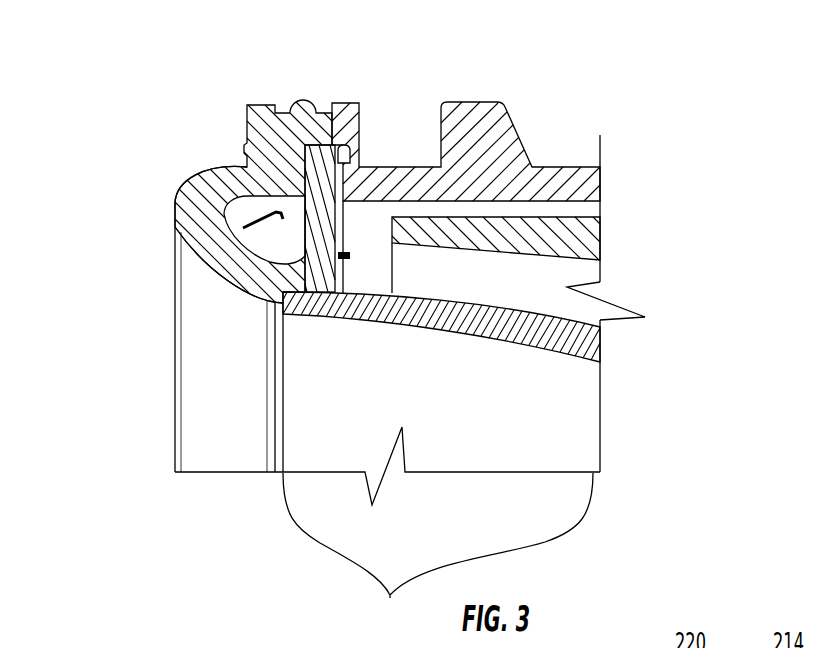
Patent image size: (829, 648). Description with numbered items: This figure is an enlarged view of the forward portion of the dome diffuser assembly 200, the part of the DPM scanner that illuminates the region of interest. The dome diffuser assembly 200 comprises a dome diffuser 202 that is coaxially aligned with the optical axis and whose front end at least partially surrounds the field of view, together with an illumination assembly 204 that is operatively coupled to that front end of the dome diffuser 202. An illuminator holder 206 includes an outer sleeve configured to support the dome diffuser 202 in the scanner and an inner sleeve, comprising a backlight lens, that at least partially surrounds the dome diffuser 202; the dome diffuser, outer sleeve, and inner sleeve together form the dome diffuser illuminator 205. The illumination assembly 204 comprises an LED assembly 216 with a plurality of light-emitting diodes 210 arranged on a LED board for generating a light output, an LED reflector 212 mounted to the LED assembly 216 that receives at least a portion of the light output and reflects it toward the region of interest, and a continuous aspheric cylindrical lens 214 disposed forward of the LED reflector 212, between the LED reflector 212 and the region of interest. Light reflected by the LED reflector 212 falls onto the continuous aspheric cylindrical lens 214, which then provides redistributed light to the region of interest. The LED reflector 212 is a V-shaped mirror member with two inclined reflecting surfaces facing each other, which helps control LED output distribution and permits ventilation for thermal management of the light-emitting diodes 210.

The dome diffuser assembly 200 is at (124, 342).
The dome diffuser 202 is at (592, 345).
The illumination assembly 204 is at (337, 77).
The dome diffuser illuminator 205 is at (438, 550).
The illuminator holder 206 is at (500, 130).
The light-emitting diodes 210 is at (300, 208).
The LED reflector 212 is at (249, 201).
The continuous aspheric cylindrical lens 214 is at (195, 211).
The LED assembly 216 is at (354, 140).